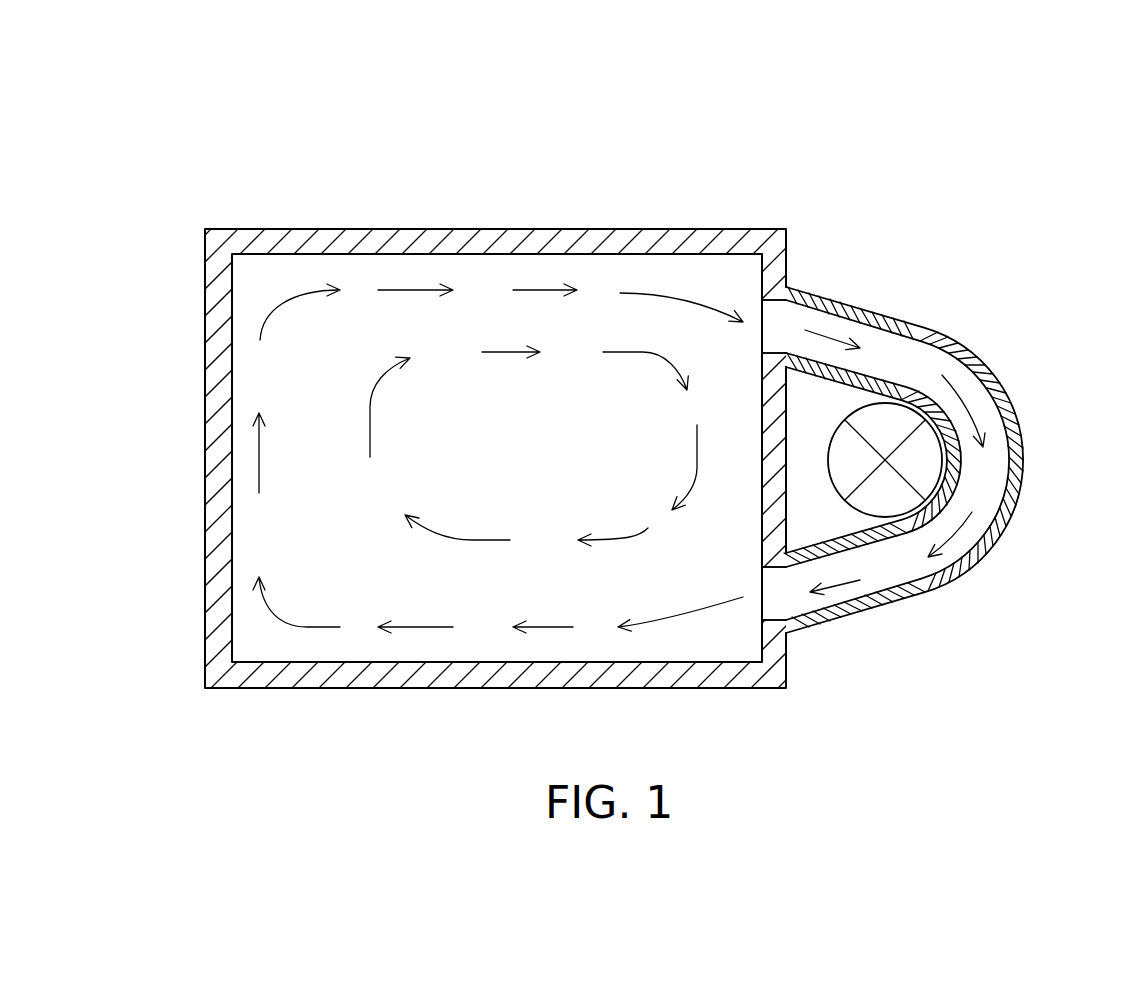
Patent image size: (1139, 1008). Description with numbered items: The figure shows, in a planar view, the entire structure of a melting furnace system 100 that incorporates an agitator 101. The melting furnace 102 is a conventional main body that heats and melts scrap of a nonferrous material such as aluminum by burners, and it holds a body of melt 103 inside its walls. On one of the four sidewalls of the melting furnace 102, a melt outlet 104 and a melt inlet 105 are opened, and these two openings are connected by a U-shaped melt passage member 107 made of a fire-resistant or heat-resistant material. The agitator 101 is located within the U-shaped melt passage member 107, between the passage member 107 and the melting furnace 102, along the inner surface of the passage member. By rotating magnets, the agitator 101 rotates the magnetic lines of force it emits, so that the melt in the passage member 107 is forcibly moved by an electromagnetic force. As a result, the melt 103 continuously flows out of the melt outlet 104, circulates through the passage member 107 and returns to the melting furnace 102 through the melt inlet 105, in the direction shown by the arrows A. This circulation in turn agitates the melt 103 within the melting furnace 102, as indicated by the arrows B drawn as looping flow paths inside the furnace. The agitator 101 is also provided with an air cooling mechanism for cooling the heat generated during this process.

The melting furnace system 100 is at (742, 150).
The agitator 101 is at (933, 470).
The melting furnace 102 is at (595, 240).
The melt 103 is at (482, 302).
The melt outlet 104 is at (773, 300).
The melt inlet 105 is at (773, 620).
The U-shaped melt passage member 107 is at (992, 375).
The arrows A is at (832, 342).
The arrows B is at (488, 543).